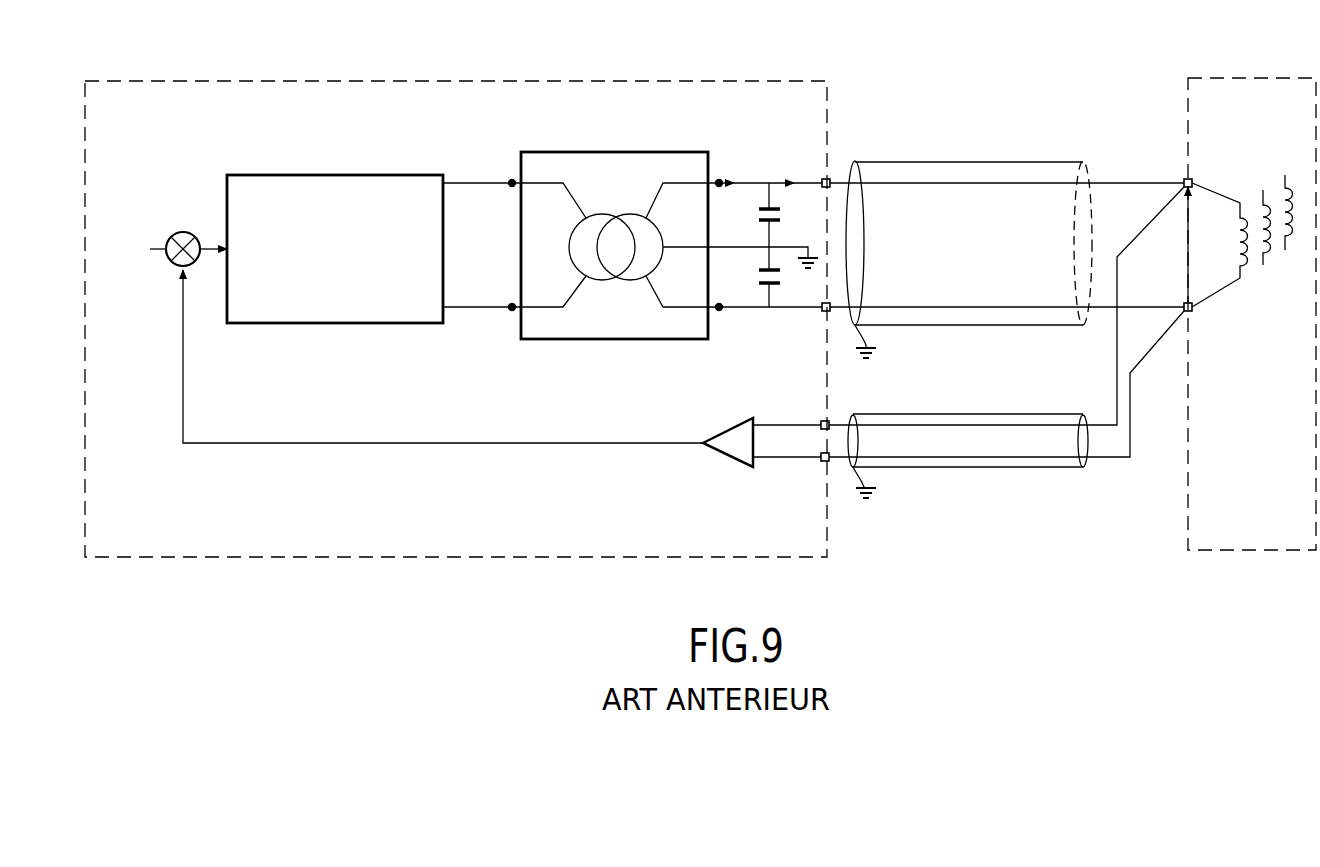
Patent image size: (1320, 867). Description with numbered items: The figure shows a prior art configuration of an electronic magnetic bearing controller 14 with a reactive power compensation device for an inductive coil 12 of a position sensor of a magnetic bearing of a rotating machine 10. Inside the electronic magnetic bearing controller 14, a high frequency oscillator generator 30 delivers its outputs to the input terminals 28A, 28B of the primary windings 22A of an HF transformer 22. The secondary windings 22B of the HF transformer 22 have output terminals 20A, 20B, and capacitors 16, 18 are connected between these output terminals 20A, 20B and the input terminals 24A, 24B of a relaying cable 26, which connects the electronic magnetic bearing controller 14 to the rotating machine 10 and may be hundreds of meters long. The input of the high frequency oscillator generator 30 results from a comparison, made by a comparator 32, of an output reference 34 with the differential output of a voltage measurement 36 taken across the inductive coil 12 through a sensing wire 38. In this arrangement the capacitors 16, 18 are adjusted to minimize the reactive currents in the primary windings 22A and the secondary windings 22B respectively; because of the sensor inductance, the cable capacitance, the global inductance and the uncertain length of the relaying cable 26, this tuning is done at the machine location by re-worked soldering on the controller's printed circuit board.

The rotating machine 10 is at (1239, 78).
The inductive coil 12 is at (1240, 242).
The electronic magnetic bearing controller 14 is at (653, 81).
The capacitor 16 is at (782, 217).
The capacitor 18 is at (782, 284).
The output terminal 20A is at (719, 188).
The output terminal 20B is at (719, 312).
The HF transformer 22 is at (614, 267).
The primary windings 22A is at (570, 247).
The secondary windings 22B is at (623, 280).
The input terminal 24A is at (820, 179).
The input terminal 24B is at (820, 314).
The relaying cable 26 is at (972, 162).
The input terminal 28A is at (512, 187).
The input terminal 28B is at (512, 311).
The high frequency oscillator generator 30 is at (349, 258).
The comparator 32 is at (183, 232).
The output reference 34 is at (147, 250).
The voltage measurement 36 is at (734, 427).
The sensing wire 38 is at (972, 414).